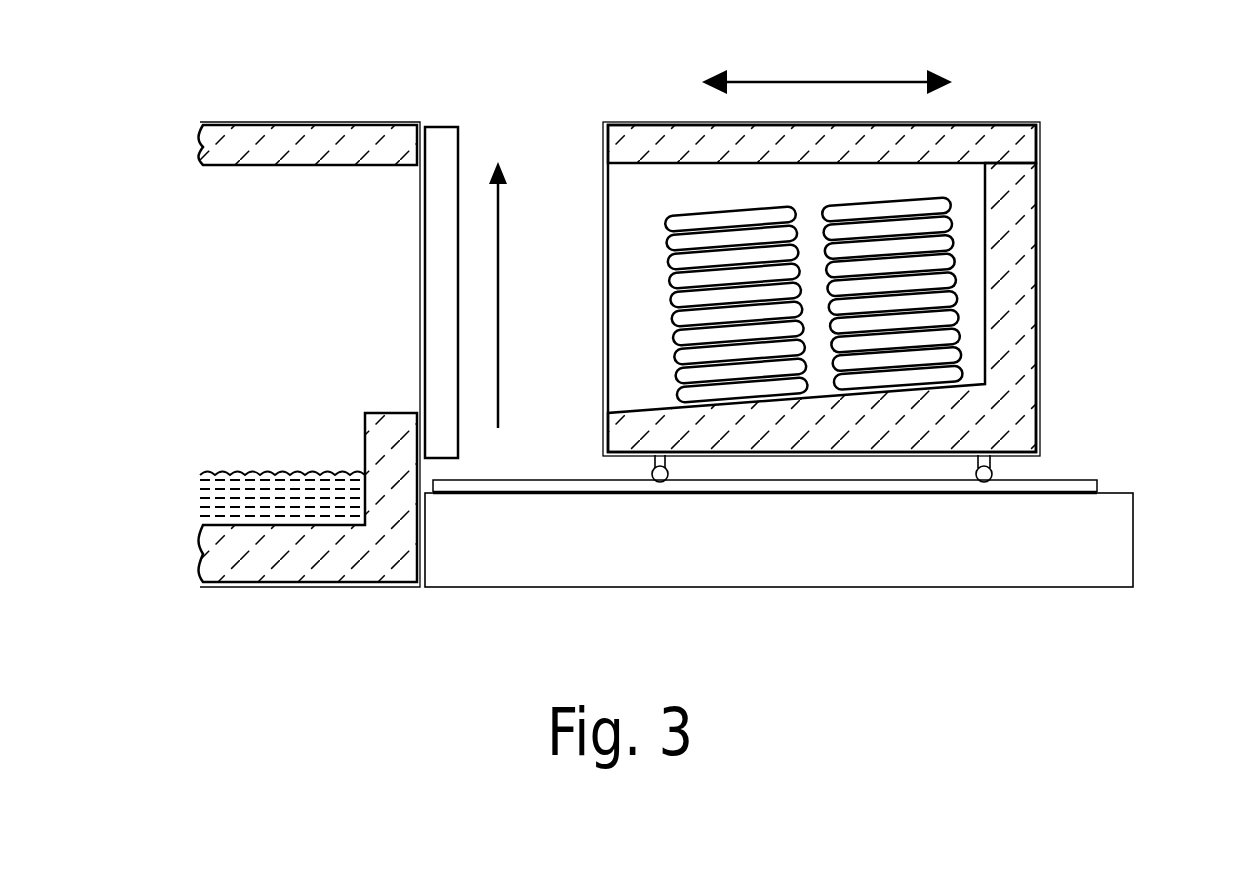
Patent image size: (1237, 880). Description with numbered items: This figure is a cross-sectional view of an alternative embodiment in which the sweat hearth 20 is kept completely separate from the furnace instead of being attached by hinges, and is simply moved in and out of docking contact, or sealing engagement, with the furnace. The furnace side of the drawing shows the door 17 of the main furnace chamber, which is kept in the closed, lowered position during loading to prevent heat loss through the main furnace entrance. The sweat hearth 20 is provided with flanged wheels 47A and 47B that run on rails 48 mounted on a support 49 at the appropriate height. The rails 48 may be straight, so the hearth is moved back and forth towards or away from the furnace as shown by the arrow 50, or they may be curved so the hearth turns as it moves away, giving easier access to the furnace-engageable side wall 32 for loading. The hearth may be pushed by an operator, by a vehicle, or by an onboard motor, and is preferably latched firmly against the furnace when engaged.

The door 17 is at (427, 304).
The sweat hearth 20 is at (886, 245).
The furnace-engageable side wall 32 is at (603, 152).
The flanged wheel 47A is at (670, 473).
The flanged wheel 47B is at (990, 471).
The rails 48 is at (508, 490).
The support 49 is at (553, 567).
The arrow 50 is at (797, 78).